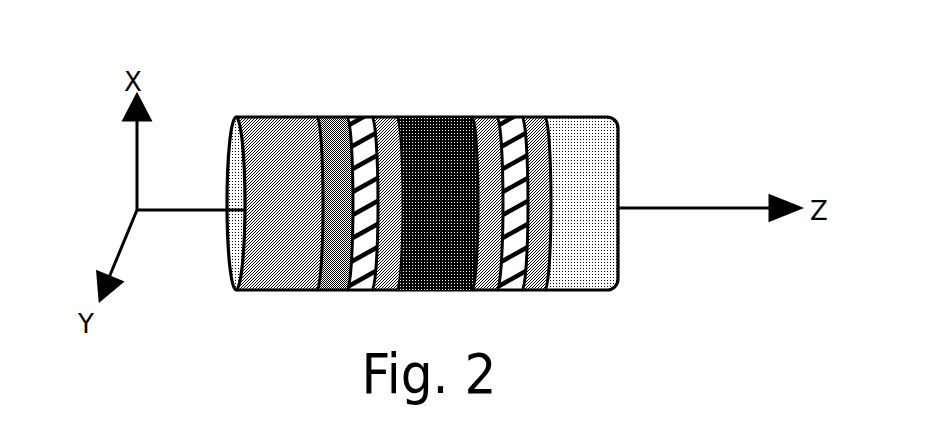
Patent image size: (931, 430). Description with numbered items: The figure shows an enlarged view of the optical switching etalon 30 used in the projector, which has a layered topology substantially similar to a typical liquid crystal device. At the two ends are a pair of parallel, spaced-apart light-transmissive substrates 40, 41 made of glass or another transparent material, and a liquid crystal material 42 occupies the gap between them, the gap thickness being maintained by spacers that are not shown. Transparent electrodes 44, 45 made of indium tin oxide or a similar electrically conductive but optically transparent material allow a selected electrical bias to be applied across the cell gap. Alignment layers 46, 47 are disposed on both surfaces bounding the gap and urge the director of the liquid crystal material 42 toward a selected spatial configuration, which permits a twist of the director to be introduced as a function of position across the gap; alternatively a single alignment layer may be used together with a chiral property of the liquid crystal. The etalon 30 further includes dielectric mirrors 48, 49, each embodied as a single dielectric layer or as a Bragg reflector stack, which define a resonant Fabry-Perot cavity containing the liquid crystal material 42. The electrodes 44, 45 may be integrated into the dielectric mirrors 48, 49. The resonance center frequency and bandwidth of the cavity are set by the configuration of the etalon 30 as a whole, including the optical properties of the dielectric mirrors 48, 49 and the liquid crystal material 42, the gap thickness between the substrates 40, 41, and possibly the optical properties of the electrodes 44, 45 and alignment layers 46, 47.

The optical switching etalon 30 is at (645, 70).
The light-transmissive substrate 40 is at (275, 115).
The light-transmissive substrate 41 is at (583, 116).
The liquid crystal material 42 is at (427, 115).
The electrode 44 is at (362, 115).
The electrode 45 is at (510, 116).
The alignment layer 46 is at (388, 115).
The alignment layer 47 is at (482, 116).
The dielectric mirror 48 is at (327, 115).
The dielectric mirror 49 is at (537, 116).